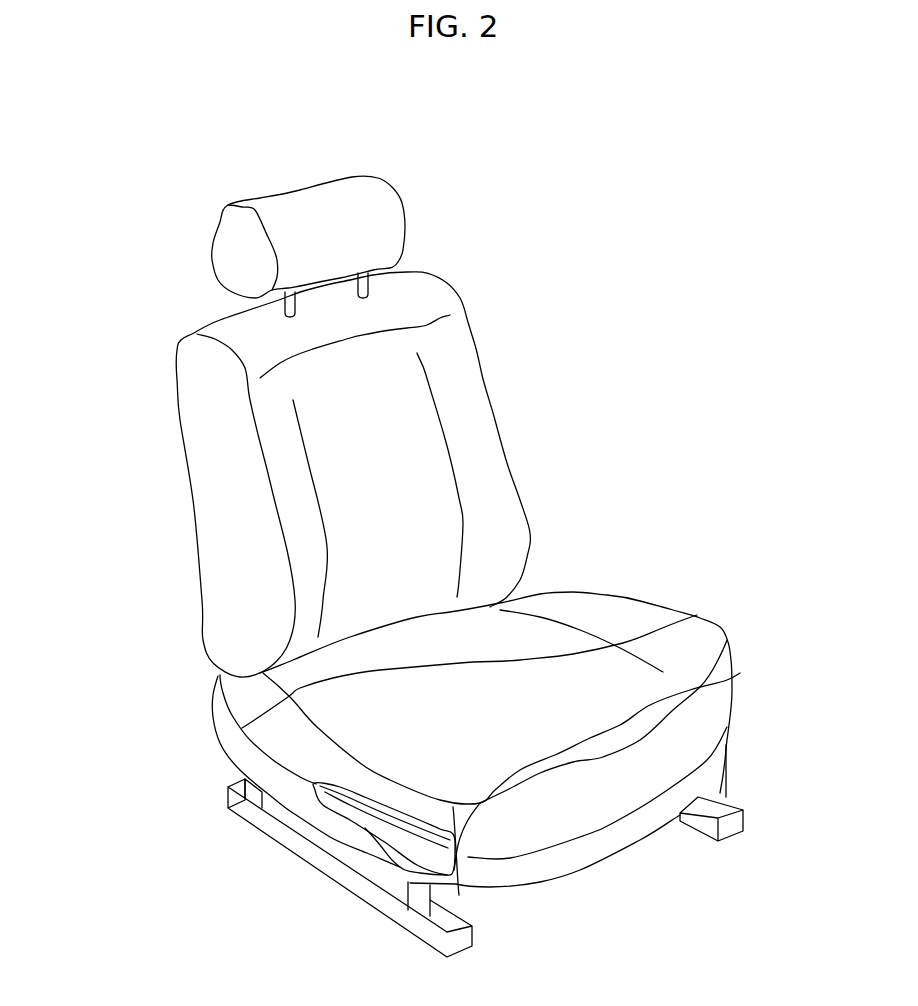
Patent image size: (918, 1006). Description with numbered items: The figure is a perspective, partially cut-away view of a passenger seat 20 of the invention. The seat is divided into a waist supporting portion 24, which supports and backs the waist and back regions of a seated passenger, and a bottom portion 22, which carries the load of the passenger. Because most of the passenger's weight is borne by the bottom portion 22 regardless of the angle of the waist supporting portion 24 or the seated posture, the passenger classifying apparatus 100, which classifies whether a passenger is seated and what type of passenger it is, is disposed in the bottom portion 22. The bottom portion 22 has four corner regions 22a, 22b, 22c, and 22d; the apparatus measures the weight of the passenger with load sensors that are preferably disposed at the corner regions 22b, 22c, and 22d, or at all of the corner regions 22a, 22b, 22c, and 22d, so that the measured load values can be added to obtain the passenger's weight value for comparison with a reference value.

The passenger seat 20 is at (447, 573).
The waist supporting portion 24 is at (453, 380).
The bottom portion 22 is at (533, 741).
The corner region 22a is at (740, 673).
The corner region 22b is at (525, 781).
The corner region 22c is at (503, 600).
The corner region 22d is at (697, 615).
The passenger classifying apparatus 100 is at (360, 837).